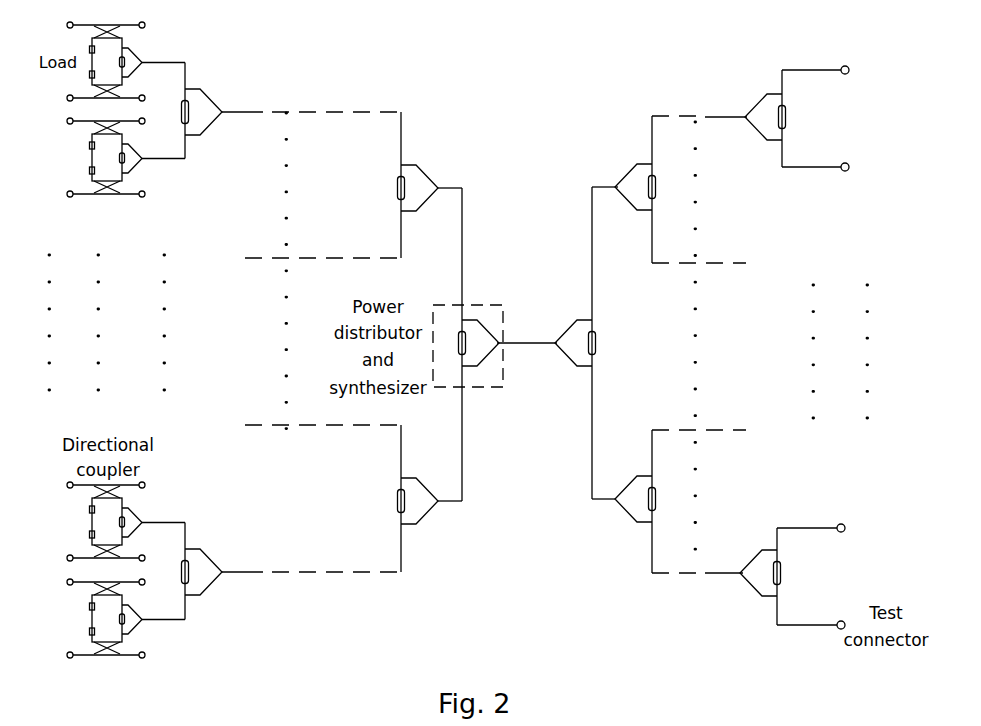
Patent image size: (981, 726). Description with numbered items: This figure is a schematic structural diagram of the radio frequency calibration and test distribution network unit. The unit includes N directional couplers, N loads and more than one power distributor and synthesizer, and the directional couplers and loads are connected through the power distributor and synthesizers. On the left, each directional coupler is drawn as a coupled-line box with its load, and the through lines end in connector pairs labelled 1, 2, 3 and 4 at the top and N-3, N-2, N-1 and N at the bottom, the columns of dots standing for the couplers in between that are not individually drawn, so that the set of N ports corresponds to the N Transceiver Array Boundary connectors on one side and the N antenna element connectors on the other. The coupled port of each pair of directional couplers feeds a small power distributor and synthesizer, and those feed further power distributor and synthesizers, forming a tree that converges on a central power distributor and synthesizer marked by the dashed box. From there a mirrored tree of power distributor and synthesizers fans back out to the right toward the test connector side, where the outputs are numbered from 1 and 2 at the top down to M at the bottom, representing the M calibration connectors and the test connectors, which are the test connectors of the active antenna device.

The antenna port 1 / test output 1 is at (457, 48).
The antenna port 2 / test output 2 is at (457, 133).
The antenna port 3 is at (107, 121).
The antenna port 4 is at (107, 194).
The antenna port N-3 is at (104, 485).
The antenna port N-2 is at (102, 556).
The antenna port N-1 is at (102, 586).
The N-th directional coupler port N is at (100, 655).
The M-th calibration connector M is at (825, 529).